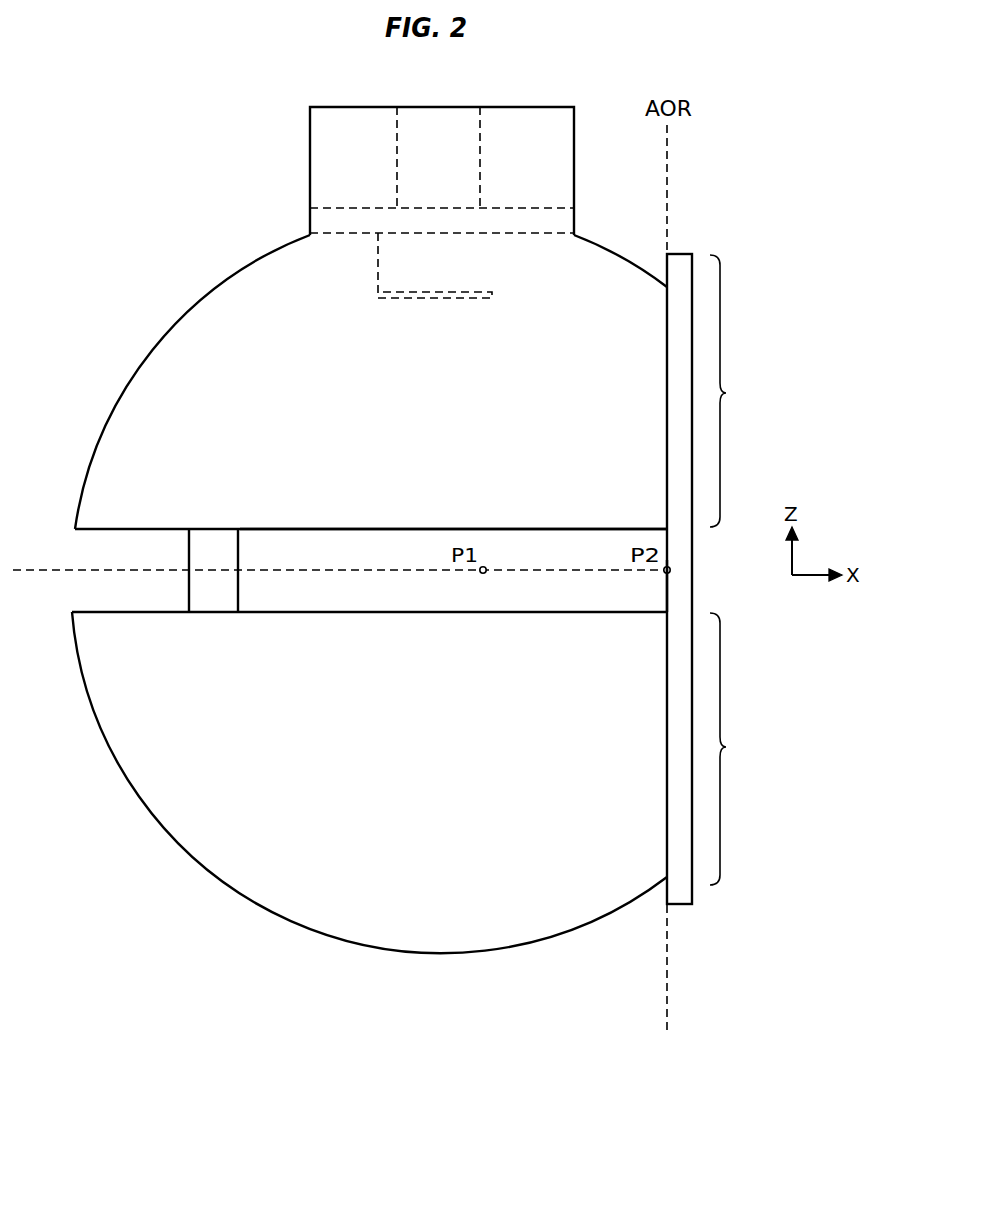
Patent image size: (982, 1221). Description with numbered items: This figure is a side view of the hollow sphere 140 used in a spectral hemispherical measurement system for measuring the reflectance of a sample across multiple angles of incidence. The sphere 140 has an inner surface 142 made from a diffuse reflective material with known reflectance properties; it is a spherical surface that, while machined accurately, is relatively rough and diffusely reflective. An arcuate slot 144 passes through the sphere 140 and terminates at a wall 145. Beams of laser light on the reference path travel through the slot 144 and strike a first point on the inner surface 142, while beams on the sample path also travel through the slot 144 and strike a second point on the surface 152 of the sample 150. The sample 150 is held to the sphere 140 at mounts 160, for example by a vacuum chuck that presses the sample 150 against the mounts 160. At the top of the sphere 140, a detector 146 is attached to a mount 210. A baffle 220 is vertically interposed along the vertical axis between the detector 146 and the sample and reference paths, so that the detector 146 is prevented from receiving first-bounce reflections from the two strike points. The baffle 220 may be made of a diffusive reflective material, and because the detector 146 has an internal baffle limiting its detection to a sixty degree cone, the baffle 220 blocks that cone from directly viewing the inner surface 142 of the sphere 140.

The hollow sphere 140 is at (142, 357).
The inner surface 142 is at (328, 547).
The arcuate slot 144 is at (556, 529).
The wall 145 is at (200, 562).
The detector 146 is at (397, 160).
The sample 150 is at (672, 254).
The surface 152 is at (664, 595).
The mounts 160 is at (736, 570).
The mount 210 is at (497, 233).
The baffle 220 is at (433, 299).